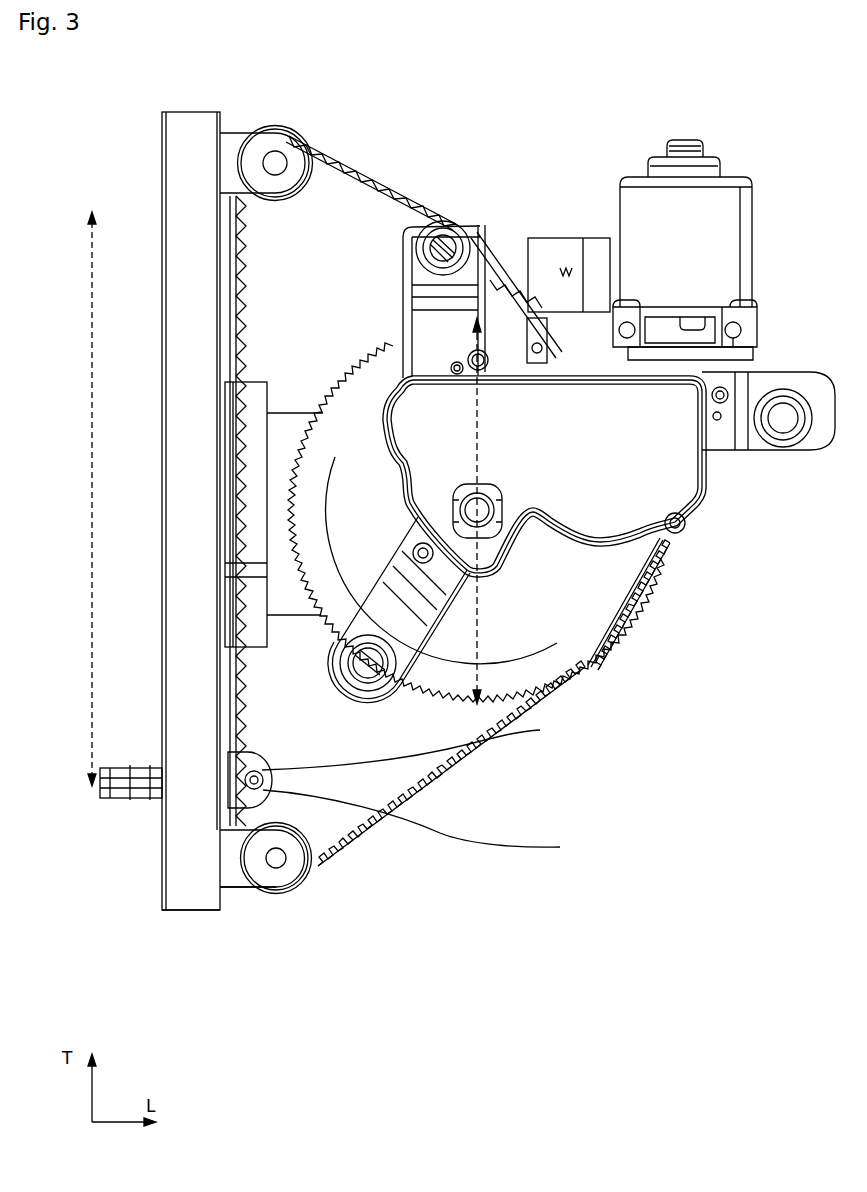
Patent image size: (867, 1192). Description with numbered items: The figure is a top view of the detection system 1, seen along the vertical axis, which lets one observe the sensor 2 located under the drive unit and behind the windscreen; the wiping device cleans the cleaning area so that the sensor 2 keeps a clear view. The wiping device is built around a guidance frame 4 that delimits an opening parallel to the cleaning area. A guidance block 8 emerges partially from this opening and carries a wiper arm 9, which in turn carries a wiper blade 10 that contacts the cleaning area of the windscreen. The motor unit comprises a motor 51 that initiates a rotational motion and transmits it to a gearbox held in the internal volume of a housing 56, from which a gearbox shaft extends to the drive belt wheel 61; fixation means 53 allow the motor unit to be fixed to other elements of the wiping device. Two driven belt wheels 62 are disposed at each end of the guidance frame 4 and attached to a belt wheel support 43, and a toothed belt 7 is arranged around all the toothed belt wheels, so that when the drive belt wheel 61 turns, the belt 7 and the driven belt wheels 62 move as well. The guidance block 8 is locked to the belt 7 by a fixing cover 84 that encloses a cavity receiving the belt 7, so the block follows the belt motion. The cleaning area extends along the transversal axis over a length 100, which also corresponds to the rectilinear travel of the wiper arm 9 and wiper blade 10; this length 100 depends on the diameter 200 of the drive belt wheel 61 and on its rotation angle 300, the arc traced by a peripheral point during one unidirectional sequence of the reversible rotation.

The detection system 1 is at (641, 810).
The sensor 2 is at (228, 326).
The guidance frame 4 is at (200, 867).
The belt 7 is at (374, 160).
The guidance block 8 is at (540, 847).
The wiper arm 9 is at (130, 803).
The wiper blade 10 is at (152, 805).
The belt wheel support 43 is at (250, 873).
The motor 51 is at (728, 218).
The fixation means 53 is at (482, 238).
The housing 56 is at (704, 483).
The drive belt wheel 61 is at (572, 578).
The driven belt wheels 62 is at (268, 132).
The fixing cover 84 is at (540, 730).
The length 100 is at (92, 560).
The diameter 200 is at (480, 620).
The rotation angle 300 is at (448, 240).